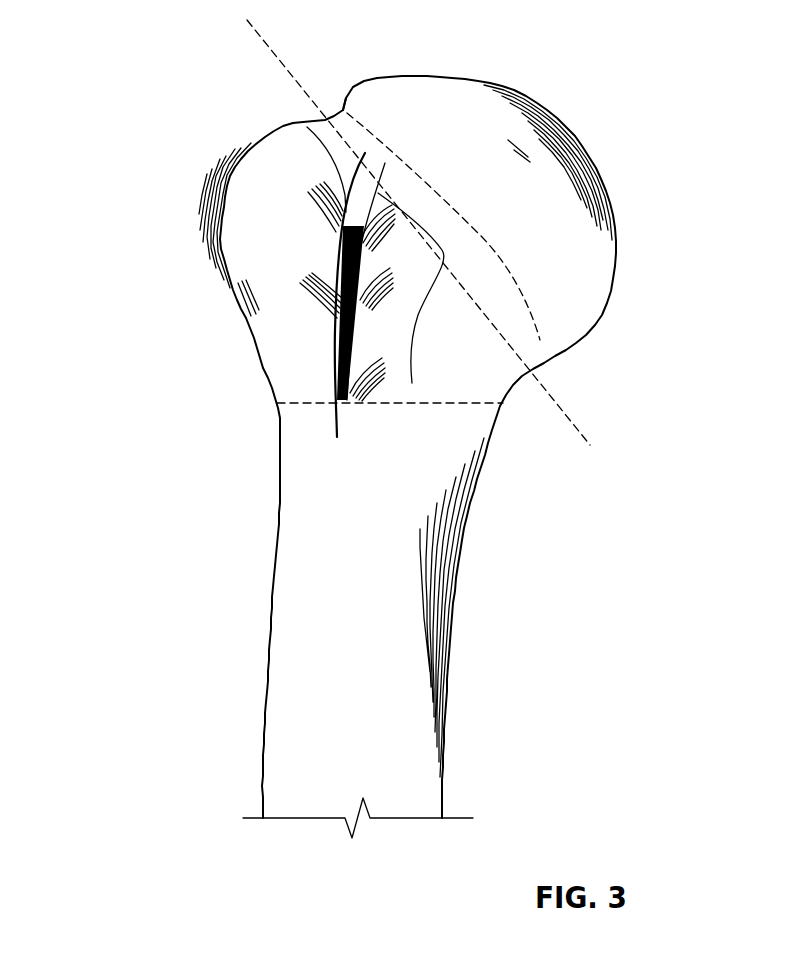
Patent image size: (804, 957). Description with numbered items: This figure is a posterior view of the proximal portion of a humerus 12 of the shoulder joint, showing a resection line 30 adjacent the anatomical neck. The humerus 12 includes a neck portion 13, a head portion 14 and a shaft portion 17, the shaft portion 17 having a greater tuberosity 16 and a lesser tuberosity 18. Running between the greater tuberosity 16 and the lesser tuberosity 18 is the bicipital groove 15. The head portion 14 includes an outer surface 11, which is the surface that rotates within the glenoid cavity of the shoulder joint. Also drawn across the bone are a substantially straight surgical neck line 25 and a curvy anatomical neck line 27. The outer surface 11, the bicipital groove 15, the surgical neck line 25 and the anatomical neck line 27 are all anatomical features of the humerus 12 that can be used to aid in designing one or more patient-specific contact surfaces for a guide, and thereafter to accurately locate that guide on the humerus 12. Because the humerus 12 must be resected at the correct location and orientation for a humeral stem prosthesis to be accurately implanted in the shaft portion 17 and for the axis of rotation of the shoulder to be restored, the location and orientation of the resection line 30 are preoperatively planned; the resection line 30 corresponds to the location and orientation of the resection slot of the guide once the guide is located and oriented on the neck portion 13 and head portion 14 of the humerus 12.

The outer surface 11 is at (617, 252).
The humerus 12 is at (128, 503).
The neck portion 13 is at (343, 108).
The head portion 14 is at (480, 122).
The bicipital groove 15 is at (342, 320).
The greater tuberosity 16 is at (290, 182).
The shaft portion 17 is at (282, 675).
The lesser tuberosity 18 is at (400, 253).
The surgical neck line 25 is at (300, 403).
The anatomical neck line 27 is at (540, 340).
The resection line 30 is at (267, 44).